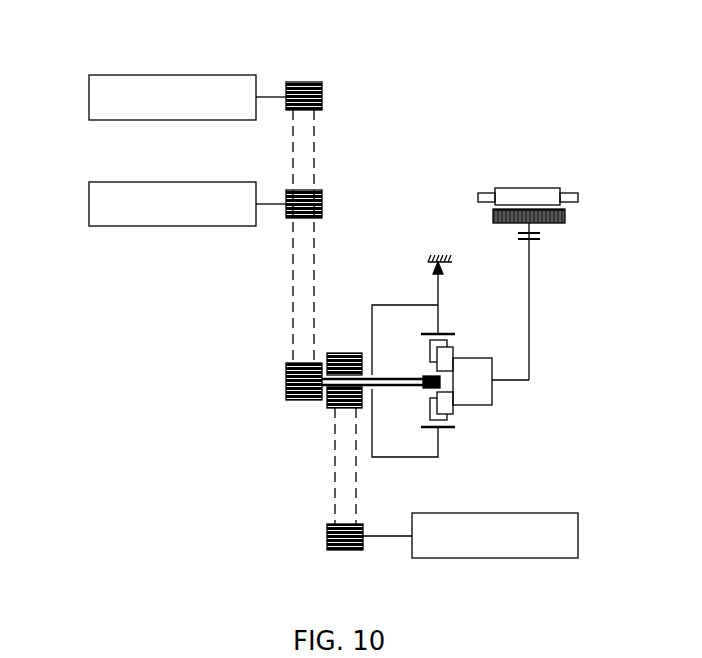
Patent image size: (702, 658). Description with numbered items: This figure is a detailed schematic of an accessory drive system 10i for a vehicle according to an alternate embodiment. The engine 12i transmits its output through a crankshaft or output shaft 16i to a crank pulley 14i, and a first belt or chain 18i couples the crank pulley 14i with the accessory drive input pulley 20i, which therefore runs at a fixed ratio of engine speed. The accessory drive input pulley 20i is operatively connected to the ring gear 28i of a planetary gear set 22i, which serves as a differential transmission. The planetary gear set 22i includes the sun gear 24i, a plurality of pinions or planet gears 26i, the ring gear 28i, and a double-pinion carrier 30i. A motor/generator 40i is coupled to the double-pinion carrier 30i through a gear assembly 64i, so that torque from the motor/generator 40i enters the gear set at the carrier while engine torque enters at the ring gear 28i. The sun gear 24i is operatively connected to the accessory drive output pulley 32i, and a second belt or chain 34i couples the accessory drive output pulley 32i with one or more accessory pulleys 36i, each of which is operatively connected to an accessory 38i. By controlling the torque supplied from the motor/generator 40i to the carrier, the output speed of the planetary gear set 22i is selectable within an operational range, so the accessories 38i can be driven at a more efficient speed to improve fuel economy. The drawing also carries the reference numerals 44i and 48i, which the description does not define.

The accessory drive system 10i is at (531, 96).
The engine 12i is at (545, 558).
The crank pulley 14i is at (338, 551).
The output shaft 16i is at (375, 537).
The first belt or chain 18i is at (333, 478).
The accessory drive input pulley 20i is at (357, 353).
The planetary gear set 22i is at (531, 390).
The sun gear 24i is at (423, 377).
The planet gears 26i is at (456, 347).
The ring gear 28i is at (443, 333).
The double-pinion carrier 30i is at (493, 397).
The accessory drive output pulley 32i is at (287, 365).
The second belt or chain 34i is at (319, 262).
The accessory pulleys 36i is at (318, 82).
The accessories 38i is at (96, 75).
The motor/generator 40i is at (543, 187).
The torque arrow 44i is at (446, 267).
The ground 48i is at (442, 244).
The gear assembly 64i is at (544, 244).